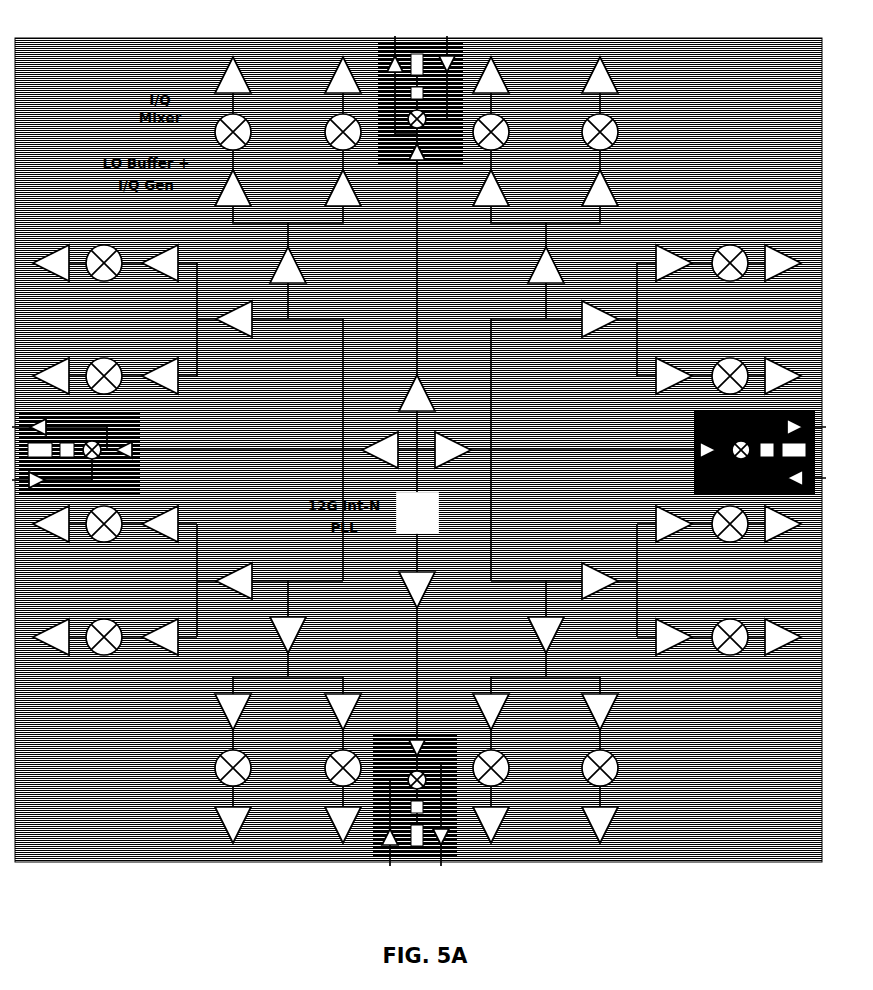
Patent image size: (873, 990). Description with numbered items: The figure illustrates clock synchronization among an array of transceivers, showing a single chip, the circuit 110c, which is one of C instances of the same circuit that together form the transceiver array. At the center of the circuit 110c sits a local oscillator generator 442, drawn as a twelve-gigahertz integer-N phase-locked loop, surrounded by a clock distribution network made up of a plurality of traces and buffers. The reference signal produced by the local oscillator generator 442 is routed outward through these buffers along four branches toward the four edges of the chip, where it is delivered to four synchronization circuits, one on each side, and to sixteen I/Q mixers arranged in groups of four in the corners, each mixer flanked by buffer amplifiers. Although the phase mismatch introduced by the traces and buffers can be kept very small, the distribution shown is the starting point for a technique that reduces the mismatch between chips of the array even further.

The circuit 110c is at (136, 40).
The local oscillator generator 442 is at (417, 513).